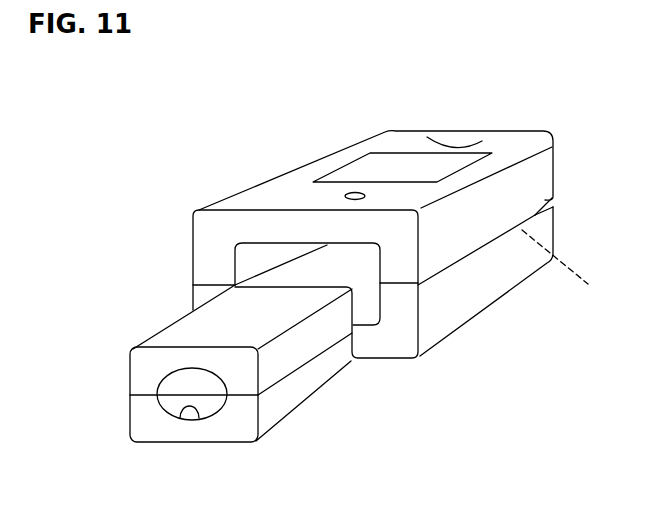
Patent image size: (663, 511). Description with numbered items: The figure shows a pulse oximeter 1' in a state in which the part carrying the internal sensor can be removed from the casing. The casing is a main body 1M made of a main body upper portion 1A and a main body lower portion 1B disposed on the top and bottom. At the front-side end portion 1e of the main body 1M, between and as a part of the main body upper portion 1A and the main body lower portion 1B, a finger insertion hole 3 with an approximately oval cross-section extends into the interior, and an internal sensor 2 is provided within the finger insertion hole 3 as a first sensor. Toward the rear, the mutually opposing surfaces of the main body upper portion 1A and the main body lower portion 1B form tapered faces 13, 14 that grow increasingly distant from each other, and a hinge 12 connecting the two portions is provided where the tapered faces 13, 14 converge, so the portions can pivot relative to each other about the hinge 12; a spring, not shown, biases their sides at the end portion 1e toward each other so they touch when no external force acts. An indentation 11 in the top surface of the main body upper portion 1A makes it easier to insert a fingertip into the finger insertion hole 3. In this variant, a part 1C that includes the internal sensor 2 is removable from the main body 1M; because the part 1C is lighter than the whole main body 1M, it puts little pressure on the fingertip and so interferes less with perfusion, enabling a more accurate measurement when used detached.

The pulse oximeter 1' is at (348, 287).
The main body 1M is at (292, 168).
The main body upper portion 1A is at (347, 144).
The main body lower portion 1B is at (496, 279).
The part including the internal sensor 1C is at (155, 337).
The end portion 1e is at (397, 302).
The internal sensor 2 is at (162, 391).
The finger insertion hole 3 is at (179, 419).
The indentation 11 is at (460, 133).
The hinge 12 is at (573, 264).
The tapered face 13 is at (555, 195).
The tapered face 14 is at (551, 203).